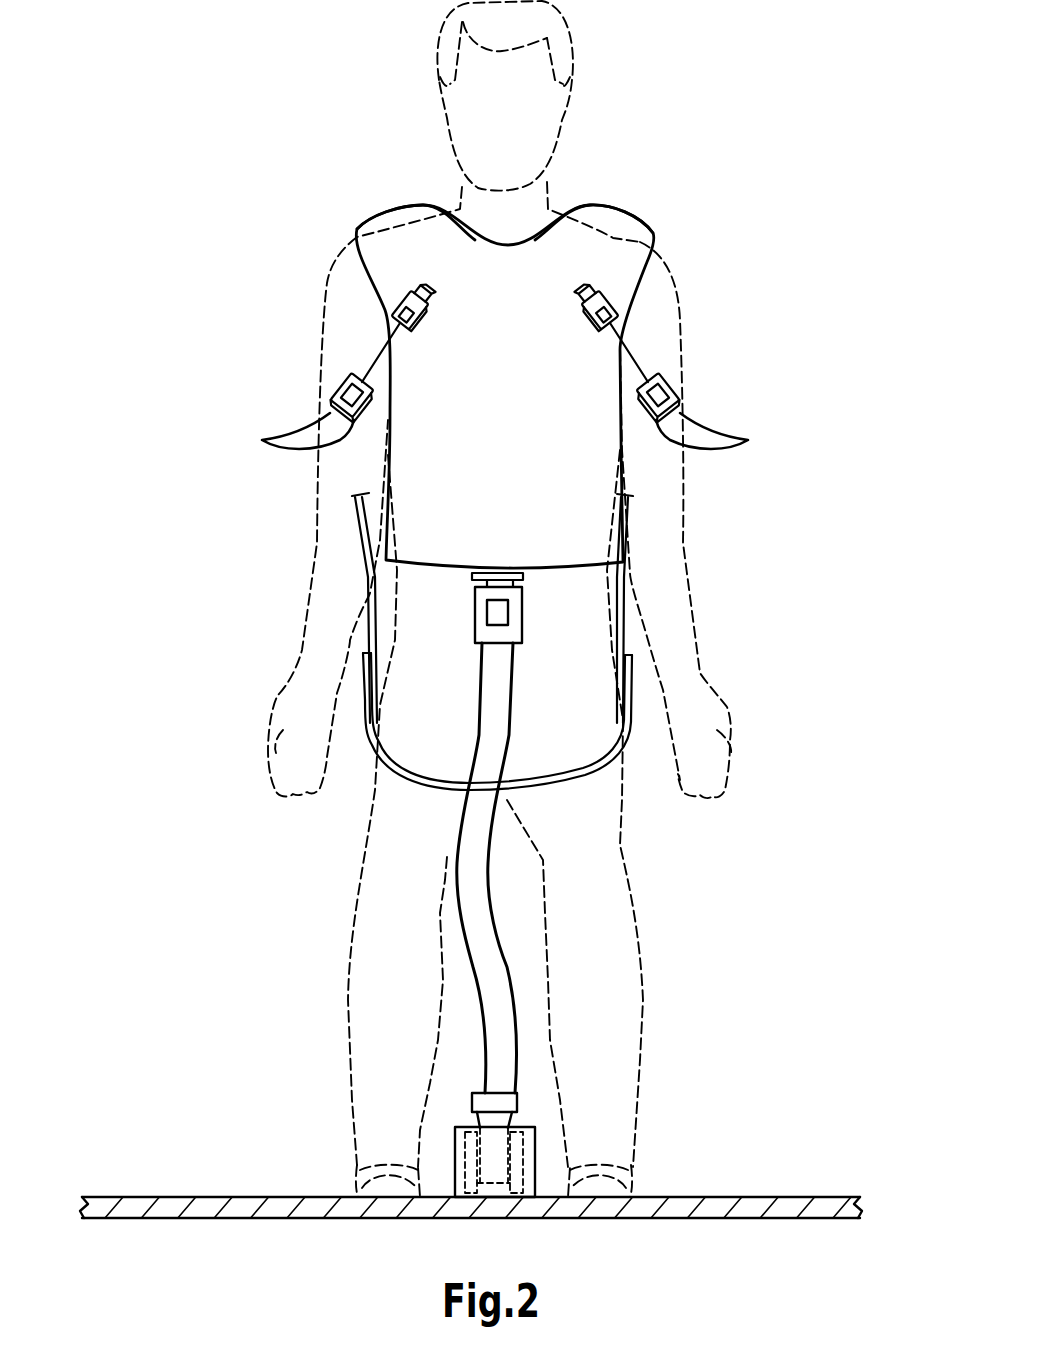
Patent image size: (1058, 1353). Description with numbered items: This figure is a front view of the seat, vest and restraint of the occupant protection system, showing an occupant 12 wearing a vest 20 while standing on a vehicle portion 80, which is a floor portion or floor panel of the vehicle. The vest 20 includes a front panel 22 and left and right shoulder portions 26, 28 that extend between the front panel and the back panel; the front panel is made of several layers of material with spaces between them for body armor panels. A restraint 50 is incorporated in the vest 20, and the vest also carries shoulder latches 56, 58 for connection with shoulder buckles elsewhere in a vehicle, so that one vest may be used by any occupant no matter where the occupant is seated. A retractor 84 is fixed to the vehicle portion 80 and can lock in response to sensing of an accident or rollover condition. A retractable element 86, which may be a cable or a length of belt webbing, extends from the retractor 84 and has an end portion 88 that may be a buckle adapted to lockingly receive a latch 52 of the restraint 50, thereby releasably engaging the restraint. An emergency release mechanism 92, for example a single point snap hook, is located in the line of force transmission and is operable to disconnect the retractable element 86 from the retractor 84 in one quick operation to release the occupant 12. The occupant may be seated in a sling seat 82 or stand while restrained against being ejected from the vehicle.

The occupant 12 is at (572, 36).
The vest 20 is at (525, 452).
The front panel 22 is at (563, 390).
The left shoulder portion 26 is at (615, 227).
The right shoulder portion 28 is at (398, 223).
The restraint 50 is at (327, 392).
The latch 52 is at (498, 582).
The shoulder latch 56 is at (383, 307).
The shoulder latch 58 is at (627, 313).
The vehicle portion 80 is at (763, 1198).
The sling seat 82 is at (622, 722).
The retractor 84 is at (533, 1160).
The retractable element 86 is at (493, 983).
The end portion 88 is at (513, 625).
The emergency release mechanism 92 is at (480, 1105).